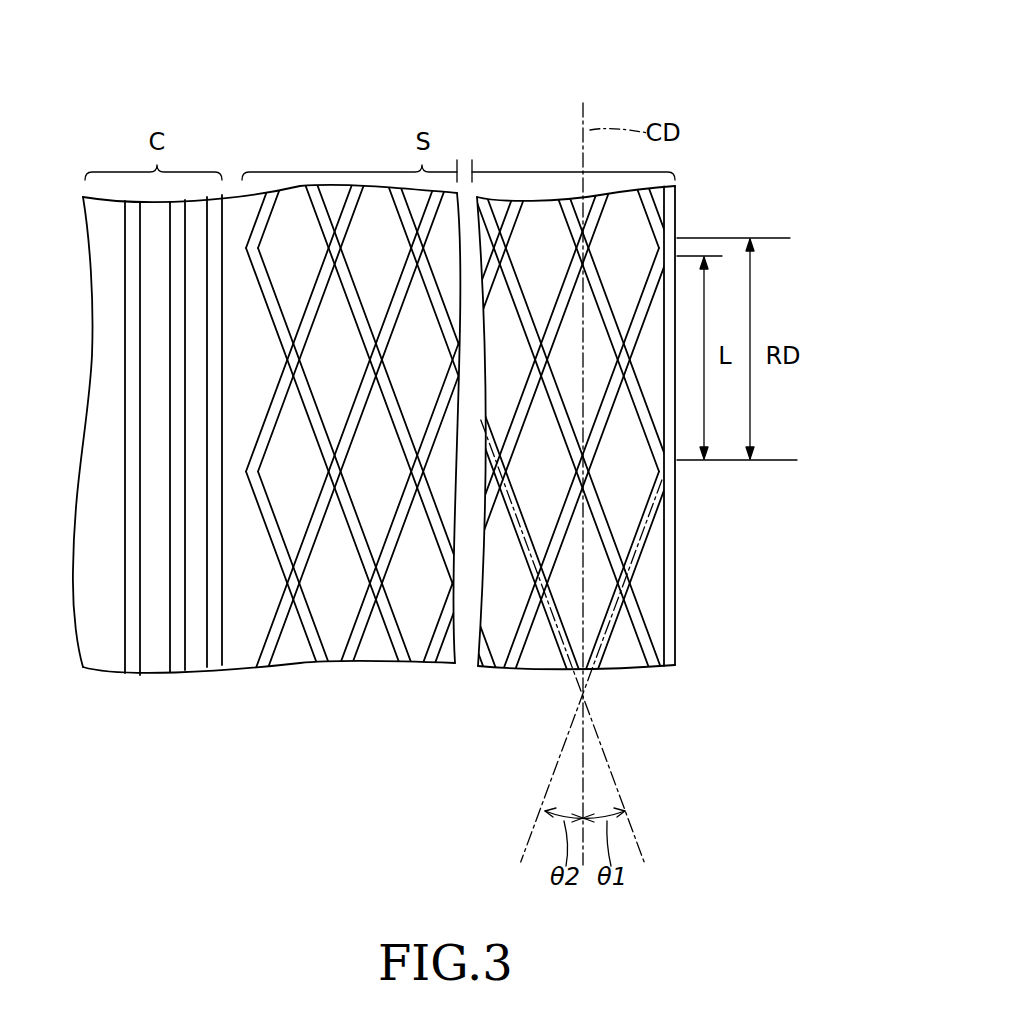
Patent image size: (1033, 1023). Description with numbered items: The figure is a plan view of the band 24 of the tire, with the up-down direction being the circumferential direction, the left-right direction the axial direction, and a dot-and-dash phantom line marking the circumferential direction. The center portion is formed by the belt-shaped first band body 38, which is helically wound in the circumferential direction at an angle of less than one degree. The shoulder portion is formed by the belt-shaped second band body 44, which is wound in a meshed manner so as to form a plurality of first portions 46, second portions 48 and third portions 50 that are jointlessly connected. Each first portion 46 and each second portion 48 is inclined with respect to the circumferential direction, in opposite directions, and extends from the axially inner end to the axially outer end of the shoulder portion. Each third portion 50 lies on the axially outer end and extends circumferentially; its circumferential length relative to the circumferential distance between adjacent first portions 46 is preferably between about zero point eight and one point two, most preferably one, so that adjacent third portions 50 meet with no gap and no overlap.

The band 24 is at (436, 31).
The first band body 38 is at (176, 636).
The second band body 44 is at (283, 563).
The first portion 46 is at (265, 205).
The second portion 48 is at (565, 205).
The third portion 50 is at (670, 207).